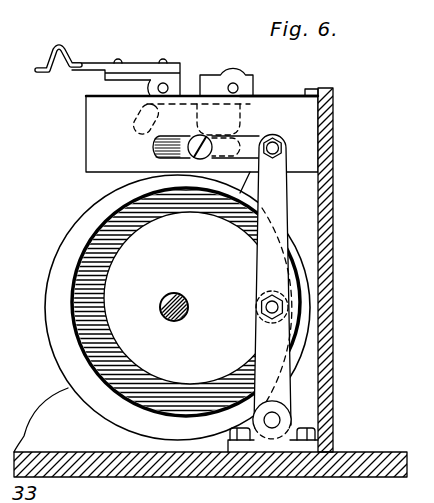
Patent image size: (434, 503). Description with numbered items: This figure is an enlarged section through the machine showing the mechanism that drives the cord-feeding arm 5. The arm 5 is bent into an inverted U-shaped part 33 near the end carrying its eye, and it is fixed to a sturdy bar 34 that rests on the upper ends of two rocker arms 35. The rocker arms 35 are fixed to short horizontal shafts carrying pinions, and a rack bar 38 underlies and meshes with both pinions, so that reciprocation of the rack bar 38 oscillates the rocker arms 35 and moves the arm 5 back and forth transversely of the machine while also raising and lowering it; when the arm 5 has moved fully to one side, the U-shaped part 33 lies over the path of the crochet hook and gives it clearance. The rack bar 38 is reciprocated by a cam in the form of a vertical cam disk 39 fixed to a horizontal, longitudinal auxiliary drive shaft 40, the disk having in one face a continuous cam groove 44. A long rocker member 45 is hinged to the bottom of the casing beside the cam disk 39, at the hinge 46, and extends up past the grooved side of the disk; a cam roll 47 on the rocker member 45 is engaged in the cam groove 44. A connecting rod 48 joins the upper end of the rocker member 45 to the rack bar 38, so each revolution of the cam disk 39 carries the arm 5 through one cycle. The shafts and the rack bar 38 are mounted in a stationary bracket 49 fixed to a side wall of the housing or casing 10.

The arm 5 is at (95, 62).
The housing or casing 10 is at (334, 163).
The inverted U-shaped part 33 is at (56, 45).
The bar 34 is at (201, 77).
The rocker arms 35 is at (190, 118).
The rack bar 38 is at (152, 148).
The cam disk 39 is at (47, 308).
The auxiliary drive shaft 40 is at (189, 308).
The cam groove 44 is at (108, 264).
The rocker member 45 is at (281, 205).
The hinge 46 is at (276, 418).
The cam roll 47 is at (293, 287).
The connecting rod 48 is at (252, 137).
The bracket 49 is at (268, 100).